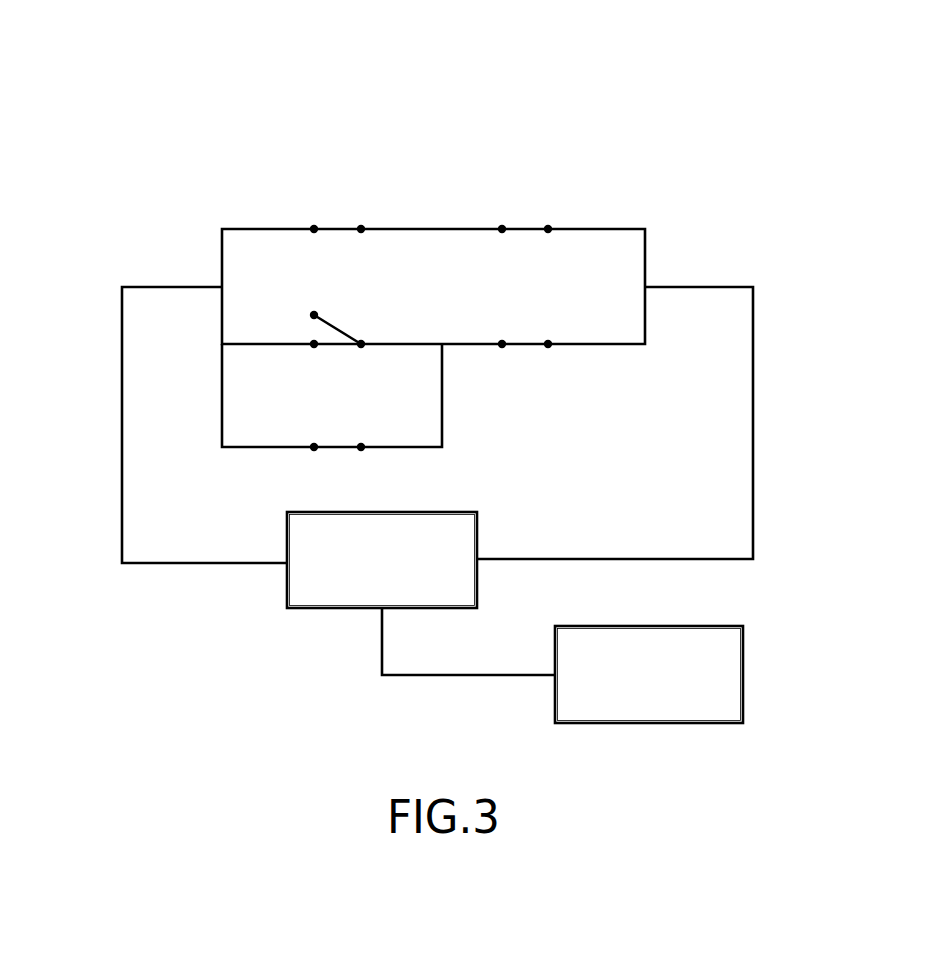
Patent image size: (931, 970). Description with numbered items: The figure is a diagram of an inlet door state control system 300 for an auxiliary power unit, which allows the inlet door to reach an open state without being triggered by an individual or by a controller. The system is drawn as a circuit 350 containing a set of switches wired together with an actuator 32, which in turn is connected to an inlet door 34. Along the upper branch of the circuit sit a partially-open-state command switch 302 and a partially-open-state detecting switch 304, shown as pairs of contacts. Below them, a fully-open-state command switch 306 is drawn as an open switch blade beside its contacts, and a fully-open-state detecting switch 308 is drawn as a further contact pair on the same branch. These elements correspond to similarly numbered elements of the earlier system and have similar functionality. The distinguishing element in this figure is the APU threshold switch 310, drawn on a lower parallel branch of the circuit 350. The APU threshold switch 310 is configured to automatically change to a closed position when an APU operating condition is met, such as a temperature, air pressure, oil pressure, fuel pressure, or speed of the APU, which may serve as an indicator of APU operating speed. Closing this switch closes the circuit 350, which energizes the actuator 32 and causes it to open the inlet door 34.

The inlet door state control system 300 is at (703, 100).
The partially-open-state command switch 302 is at (343, 220).
The partially-open-state detecting switch 304 is at (528, 220).
The fully-open-state command switch 306 is at (350, 320).
The fully-open-state detecting switch 308 is at (527, 360).
The APU threshold switch 310 is at (336, 440).
The circuit 350 is at (122, 430).
The actuator 32 is at (313, 608).
The inlet door 34 is at (720, 723).